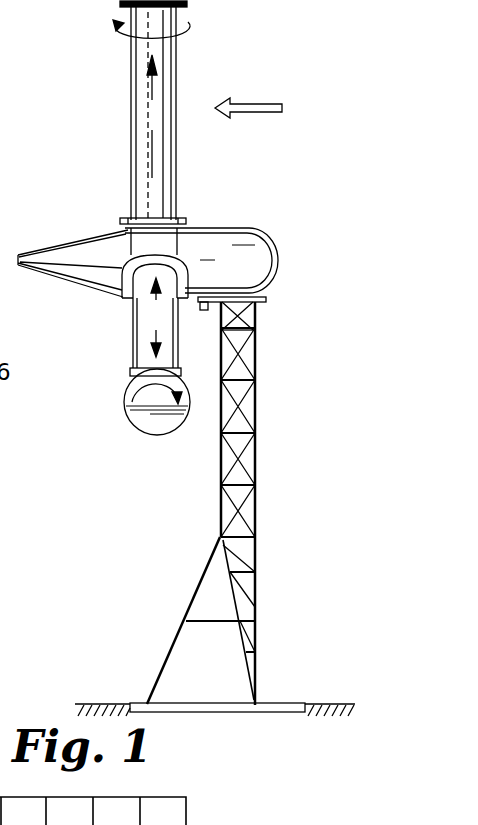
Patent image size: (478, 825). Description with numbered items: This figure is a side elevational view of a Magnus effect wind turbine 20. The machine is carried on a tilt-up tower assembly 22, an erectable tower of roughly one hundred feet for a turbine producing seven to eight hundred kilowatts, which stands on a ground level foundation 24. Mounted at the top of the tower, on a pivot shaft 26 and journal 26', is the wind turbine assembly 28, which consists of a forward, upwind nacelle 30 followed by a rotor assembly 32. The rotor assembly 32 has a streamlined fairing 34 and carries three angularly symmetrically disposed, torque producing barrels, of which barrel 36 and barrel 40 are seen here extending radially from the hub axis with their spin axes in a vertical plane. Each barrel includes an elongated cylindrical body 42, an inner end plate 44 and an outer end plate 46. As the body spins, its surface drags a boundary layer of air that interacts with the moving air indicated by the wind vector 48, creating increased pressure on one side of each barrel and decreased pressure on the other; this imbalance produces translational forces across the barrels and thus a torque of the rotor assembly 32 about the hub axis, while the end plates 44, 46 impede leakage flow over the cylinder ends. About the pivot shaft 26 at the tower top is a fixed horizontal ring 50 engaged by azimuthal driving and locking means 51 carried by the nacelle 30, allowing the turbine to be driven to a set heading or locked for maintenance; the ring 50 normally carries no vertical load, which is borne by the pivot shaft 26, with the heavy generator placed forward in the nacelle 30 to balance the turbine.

The wind turbine 20 is at (250, 215).
The tilt-up tower assembly 22 is at (258, 465).
The ground level foundation 24 is at (206, 702).
The pivot shaft 26 is at (253, 295).
The journal 26' is at (270, 339).
The wind turbine assembly 28 is at (207, 227).
The nacelle 30 is at (252, 270).
The rotor assembly 32 is at (87, 206).
The streamlined fairing 34 is at (73, 263).
The torque producing barrel 36 is at (176, 62).
The torque producing barrel 40 is at (133, 345).
The elongated cylindrical body 42 is at (154, 199).
The inner end plate 44 is at (112, 231).
The outer end plate 46 is at (130, 414).
The wind vector 48 is at (260, 104).
The fixed horizontal ring 50 is at (250, 304).
The azimuthal driving and locking means 51 is at (198, 312).